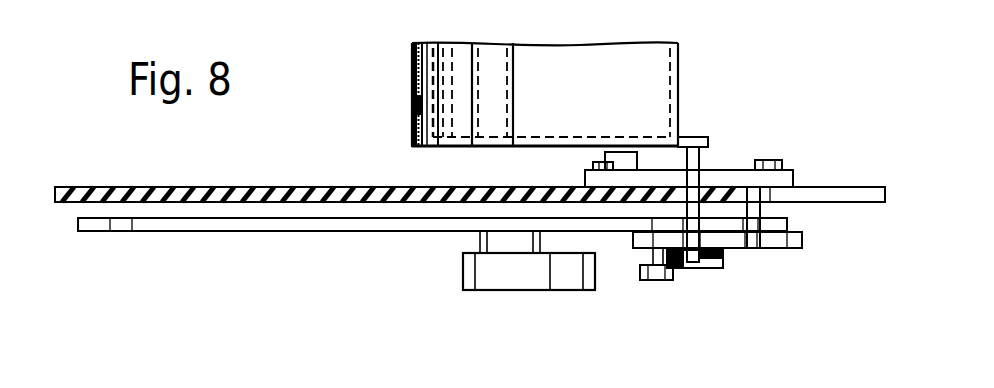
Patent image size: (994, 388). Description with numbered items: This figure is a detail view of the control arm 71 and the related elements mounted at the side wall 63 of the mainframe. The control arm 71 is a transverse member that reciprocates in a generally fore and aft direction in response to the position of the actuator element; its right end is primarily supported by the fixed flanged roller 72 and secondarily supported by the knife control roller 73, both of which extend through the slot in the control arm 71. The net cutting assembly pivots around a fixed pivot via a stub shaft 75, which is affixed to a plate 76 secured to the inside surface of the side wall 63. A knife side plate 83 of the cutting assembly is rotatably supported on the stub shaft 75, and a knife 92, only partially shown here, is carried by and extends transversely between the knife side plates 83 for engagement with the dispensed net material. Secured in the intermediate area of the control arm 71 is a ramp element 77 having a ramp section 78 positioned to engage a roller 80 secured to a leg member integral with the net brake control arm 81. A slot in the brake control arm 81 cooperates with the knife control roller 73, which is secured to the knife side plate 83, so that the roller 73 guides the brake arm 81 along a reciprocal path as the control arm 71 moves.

The knife 92 is at (412, 60).
The knife side plate 83 is at (682, 137).
The stub shaft 75 is at (603, 154).
The plate 76 is at (730, 168).
The fixed flanged roller 72 is at (773, 205).
The side wall 63 is at (170, 187).
The control arm 71 is at (255, 232).
The ramp section 78 is at (567, 267).
The ramp element 77 is at (502, 270).
The net brake control arm 81 is at (783, 250).
The roller 80 is at (640, 280).
The knife control roller 73 is at (707, 268).